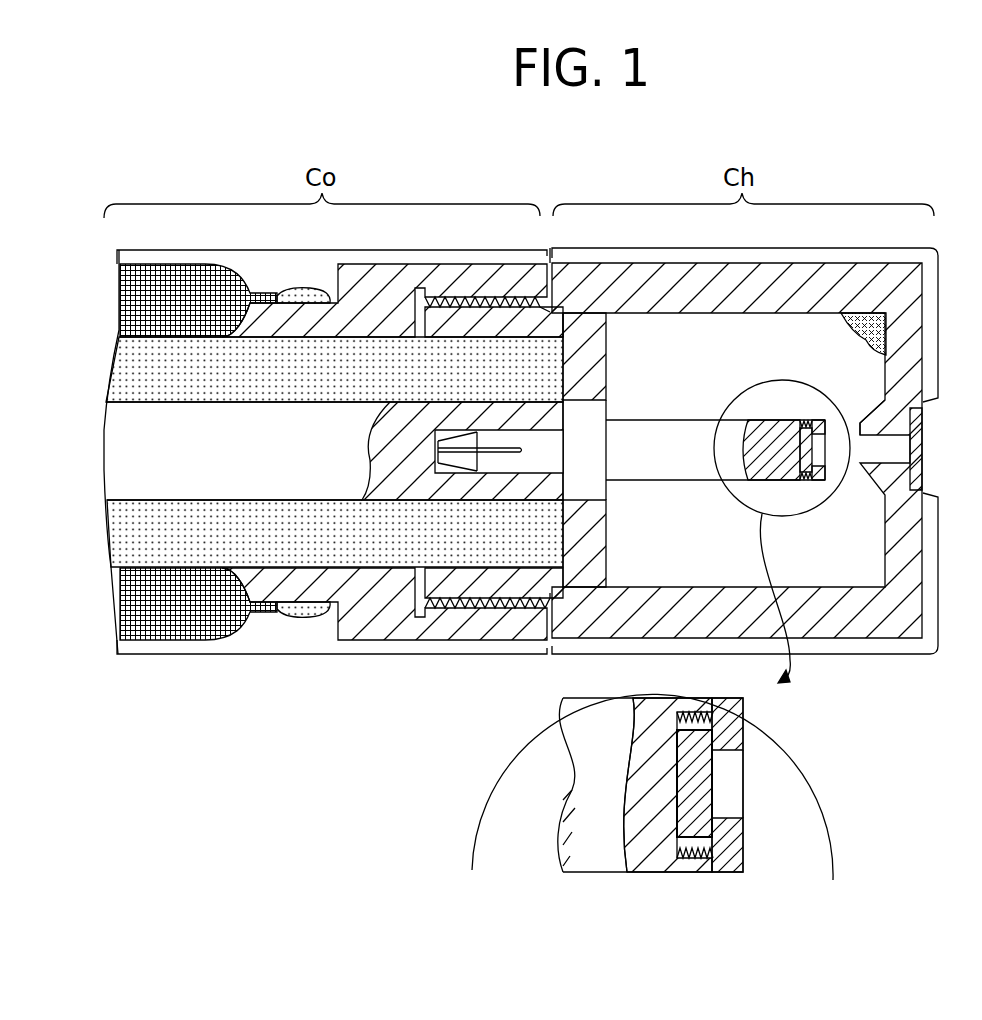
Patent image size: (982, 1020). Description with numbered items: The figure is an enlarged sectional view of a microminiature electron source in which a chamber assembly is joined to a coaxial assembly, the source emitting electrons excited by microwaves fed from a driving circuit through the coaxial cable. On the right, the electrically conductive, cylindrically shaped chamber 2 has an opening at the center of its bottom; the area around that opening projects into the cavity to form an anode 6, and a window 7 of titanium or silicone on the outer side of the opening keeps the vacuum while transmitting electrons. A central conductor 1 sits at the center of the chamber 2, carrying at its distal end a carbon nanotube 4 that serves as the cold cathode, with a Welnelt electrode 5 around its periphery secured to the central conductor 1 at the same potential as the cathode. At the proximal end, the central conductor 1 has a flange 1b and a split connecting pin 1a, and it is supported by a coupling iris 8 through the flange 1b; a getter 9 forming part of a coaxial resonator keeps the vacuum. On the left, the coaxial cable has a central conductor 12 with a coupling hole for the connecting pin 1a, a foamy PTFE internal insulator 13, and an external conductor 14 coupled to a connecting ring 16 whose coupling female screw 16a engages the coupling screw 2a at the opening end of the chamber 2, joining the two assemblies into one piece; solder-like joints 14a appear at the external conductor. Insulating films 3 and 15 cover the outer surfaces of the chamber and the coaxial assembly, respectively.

The central conductor 1 is at (685, 427).
The connecting pin 1a is at (540, 457).
The flange 1b is at (592, 487).
The chamber 2 is at (853, 287).
The coupling screw 2a is at (503, 297).
The film 3 is at (682, 254).
The carbon nanotube 4 is at (748, 448).
The Welnelt electrode 5 is at (723, 725).
The anode 6 is at (868, 410).
The window 7 is at (922, 462).
The coupling iris 8 is at (593, 358).
The getter 9 is at (886, 333).
The central conductor 12 is at (140, 452).
The internal insulator 13 is at (128, 365).
The external conductor 14 is at (180, 287).
The solder 14a is at (300, 290).
The film 15 is at (231, 253).
The connecting ring 16 is at (420, 276).
The coupling female screw 16a is at (458, 293).